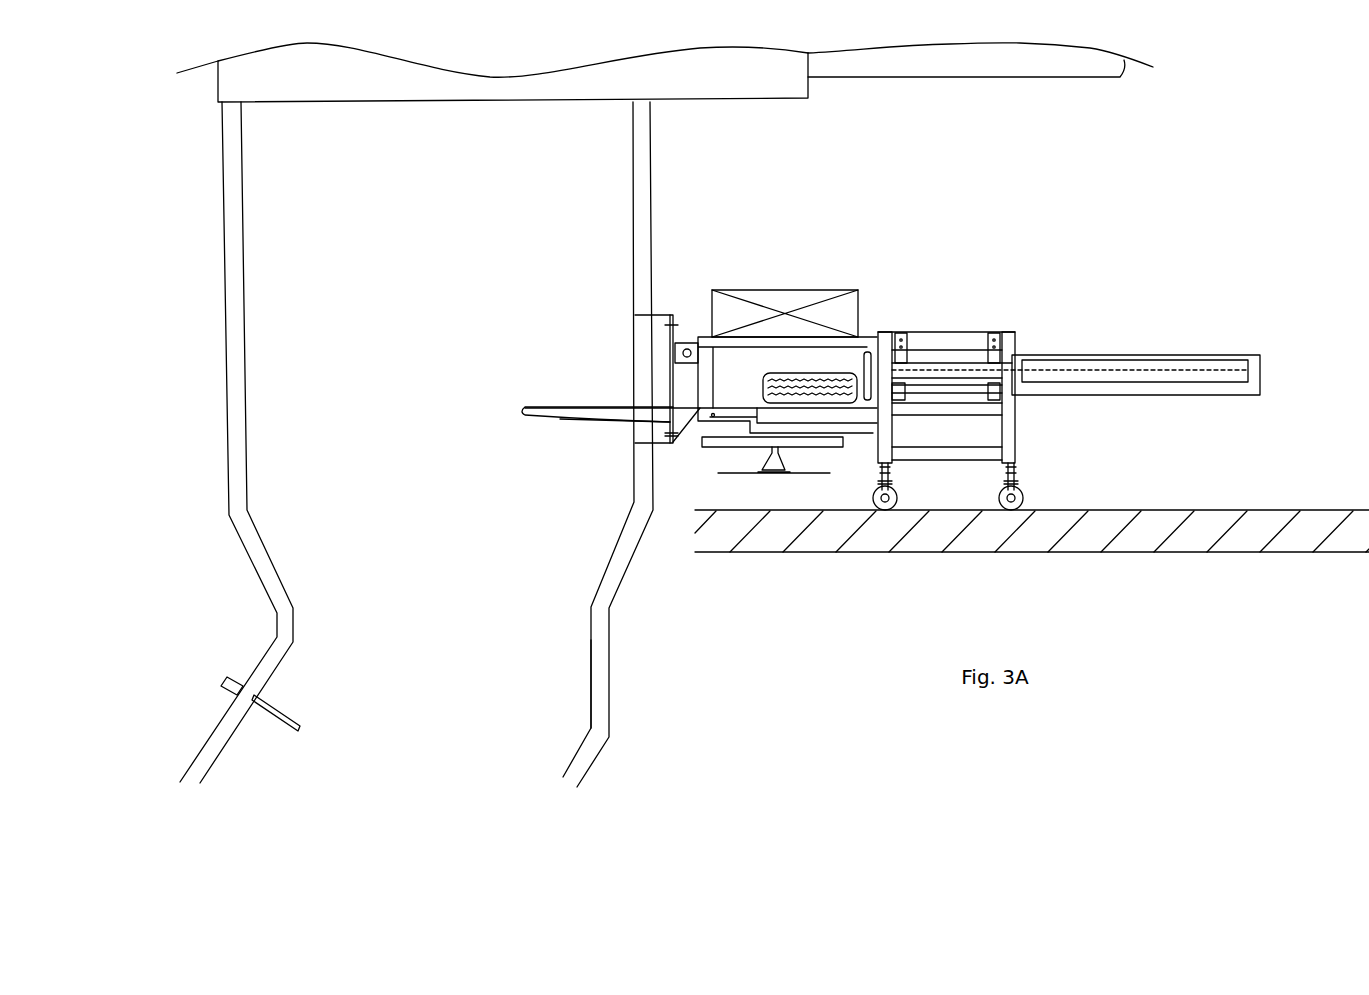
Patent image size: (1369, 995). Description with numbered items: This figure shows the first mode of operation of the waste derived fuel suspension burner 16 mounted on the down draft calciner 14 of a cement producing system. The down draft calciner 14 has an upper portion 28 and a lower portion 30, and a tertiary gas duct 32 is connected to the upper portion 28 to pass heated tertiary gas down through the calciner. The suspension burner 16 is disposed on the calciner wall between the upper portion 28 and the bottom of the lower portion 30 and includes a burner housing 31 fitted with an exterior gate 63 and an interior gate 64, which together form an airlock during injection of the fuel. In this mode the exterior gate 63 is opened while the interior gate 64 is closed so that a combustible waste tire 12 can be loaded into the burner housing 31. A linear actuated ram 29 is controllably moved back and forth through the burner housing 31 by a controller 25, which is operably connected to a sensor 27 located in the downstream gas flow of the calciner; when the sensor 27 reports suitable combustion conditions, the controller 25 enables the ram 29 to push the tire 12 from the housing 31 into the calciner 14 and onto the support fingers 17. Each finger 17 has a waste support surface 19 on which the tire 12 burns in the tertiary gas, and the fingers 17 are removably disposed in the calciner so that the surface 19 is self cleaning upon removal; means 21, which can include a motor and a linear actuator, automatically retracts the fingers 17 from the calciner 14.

The combustible waste tires 12 is at (767, 377).
The down draft calciner 14 is at (648, 183).
The suspension burner 16 is at (937, 225).
The support fingers 17 is at (577, 422).
The waste support surface 19 is at (550, 407).
The means for automatically retracting the fingers 21 is at (813, 447).
The controller 25 is at (962, 332).
The sensor 27 is at (228, 677).
The upper portion of the down draft calciner 28 is at (217, 90).
The linear actuated ram 29 is at (867, 327).
The lower portion of the down draft calciner 30 is at (609, 658).
The burner housing 31 is at (707, 337).
The tertiary gas duct 32 is at (1027, 77).
The exterior gate 63 is at (747, 290).
The interior gate 64 is at (687, 382).